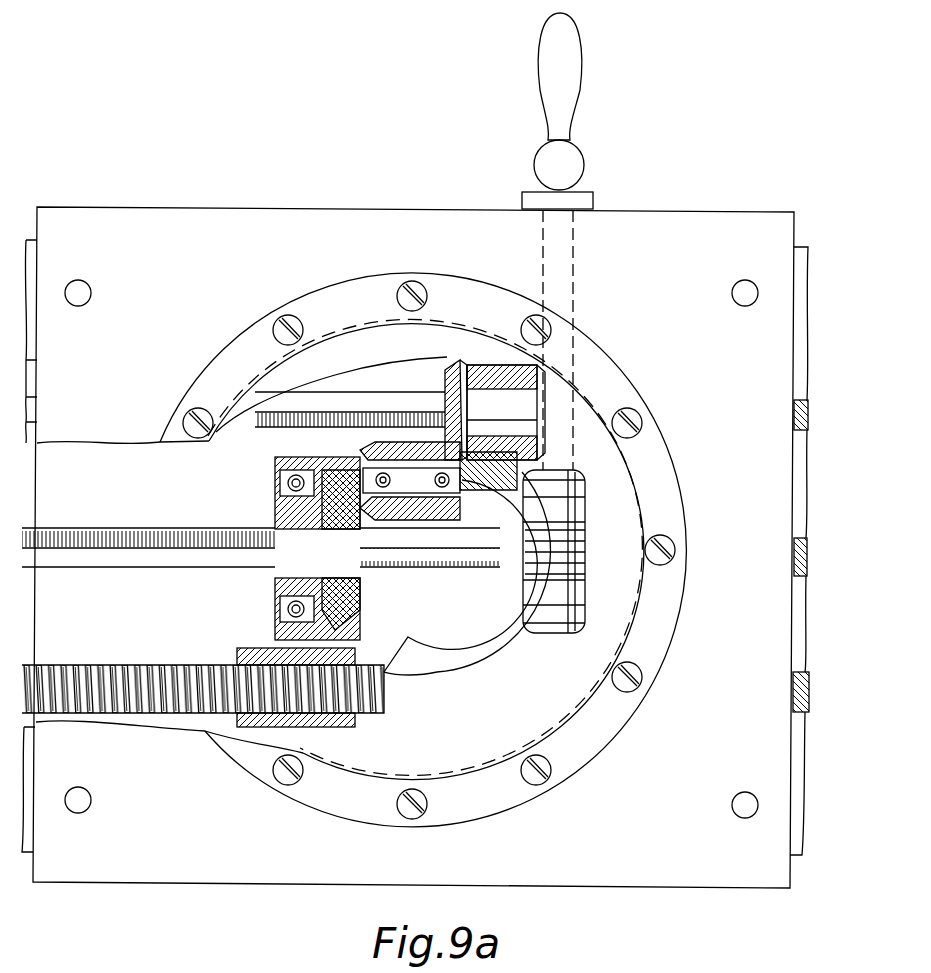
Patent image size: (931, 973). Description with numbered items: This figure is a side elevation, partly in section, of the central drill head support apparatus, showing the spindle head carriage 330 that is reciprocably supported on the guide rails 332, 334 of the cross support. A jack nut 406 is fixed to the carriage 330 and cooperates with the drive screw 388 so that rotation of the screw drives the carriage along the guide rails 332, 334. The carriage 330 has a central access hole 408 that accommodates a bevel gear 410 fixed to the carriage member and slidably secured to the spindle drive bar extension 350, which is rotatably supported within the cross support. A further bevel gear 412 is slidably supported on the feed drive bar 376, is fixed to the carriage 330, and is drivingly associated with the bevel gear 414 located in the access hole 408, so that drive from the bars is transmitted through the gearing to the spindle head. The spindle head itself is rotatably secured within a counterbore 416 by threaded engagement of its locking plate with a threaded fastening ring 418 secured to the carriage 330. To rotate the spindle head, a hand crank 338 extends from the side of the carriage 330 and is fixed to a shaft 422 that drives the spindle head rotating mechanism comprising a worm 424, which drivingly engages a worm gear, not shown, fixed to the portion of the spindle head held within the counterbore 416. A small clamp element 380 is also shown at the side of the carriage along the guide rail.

The spindle head carriage 330 is at (640, 886).
The guide rail 332 is at (35, 787).
The guide rail 334 is at (37, 282).
The hand crank 338 is at (565, 90).
The spindle drive bar extension 350 is at (105, 548).
The feed drive bar 376 is at (265, 430).
The clamp 380 is at (793, 700).
The drive screw 388 is at (95, 662).
The jack nut 406 is at (262, 648).
The central access hole 408 is at (457, 627).
The bevel gear 410 is at (355, 600).
The bevel gear 412 is at (445, 378).
The bevel gear 414 is at (455, 502).
The counterbore 416 is at (425, 676).
The threaded fastening ring 418 is at (640, 500).
The shaft 422 is at (572, 250).
The worm 424 is at (585, 568).